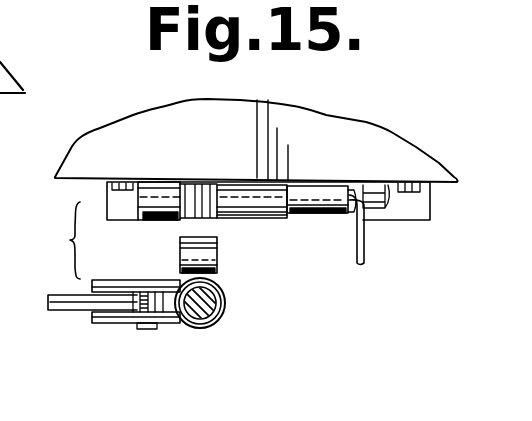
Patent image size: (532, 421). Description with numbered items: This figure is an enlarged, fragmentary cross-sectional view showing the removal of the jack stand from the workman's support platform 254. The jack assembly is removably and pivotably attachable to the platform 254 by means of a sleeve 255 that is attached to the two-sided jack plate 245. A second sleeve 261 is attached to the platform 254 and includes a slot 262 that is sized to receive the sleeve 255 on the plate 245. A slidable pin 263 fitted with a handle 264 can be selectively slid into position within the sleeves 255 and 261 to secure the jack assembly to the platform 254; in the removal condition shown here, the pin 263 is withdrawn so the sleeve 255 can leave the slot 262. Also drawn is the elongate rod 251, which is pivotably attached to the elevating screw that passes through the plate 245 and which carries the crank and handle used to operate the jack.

The workman's platform 254 is at (190, 147).
The slot 262 is at (202, 197).
The sleeve 261 is at (268, 193).
The slidable pin 263 is at (335, 202).
The handle 264 is at (365, 248).
The sleeve 255 is at (218, 262).
The elongate rod 251 is at (67, 302).
The two-sided plate 245 is at (125, 322).